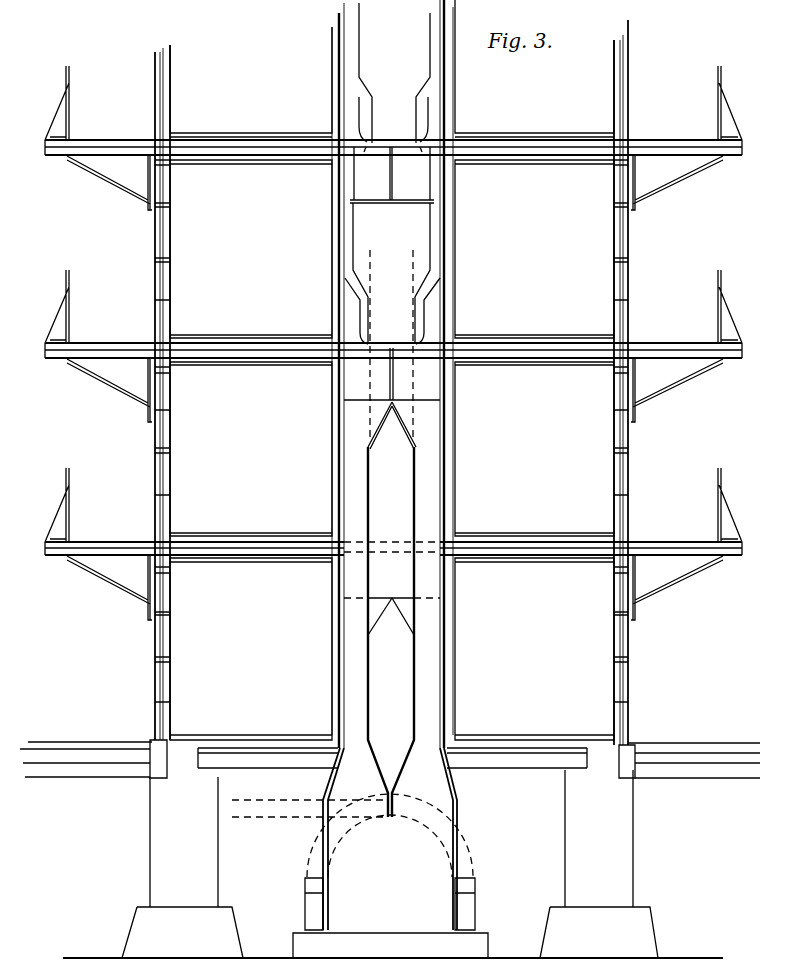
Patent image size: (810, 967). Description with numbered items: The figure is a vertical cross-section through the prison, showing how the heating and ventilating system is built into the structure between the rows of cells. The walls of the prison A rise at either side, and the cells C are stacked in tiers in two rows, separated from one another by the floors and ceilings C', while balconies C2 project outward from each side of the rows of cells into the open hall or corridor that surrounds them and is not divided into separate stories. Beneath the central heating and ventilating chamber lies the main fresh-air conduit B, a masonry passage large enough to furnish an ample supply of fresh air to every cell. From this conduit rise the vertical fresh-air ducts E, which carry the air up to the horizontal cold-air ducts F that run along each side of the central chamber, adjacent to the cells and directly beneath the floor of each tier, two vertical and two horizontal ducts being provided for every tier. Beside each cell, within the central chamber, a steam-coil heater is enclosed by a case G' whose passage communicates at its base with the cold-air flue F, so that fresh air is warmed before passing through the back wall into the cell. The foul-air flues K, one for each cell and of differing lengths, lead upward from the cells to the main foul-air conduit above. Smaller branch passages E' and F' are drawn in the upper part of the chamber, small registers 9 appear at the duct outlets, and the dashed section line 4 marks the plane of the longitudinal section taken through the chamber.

The walls of the prison A is at (158, 80).
The main fresh-air conduit B is at (393, 864).
The cells C is at (392, 370).
The floors and ceilings C' is at (390, 445).
The balconies C2 is at (393, 343).
The vertical fresh-air ducts E is at (413, 537).
The branch flues E' is at (381, 73).
The horizontal cold-air ducts F is at (392, 374).
The upper chambers F' is at (392, 175).
The case G' is at (388, 273).
The foul-air flue K is at (348, 46).
The section line 4 is at (394, 346).
The registers 9 is at (394, 157).